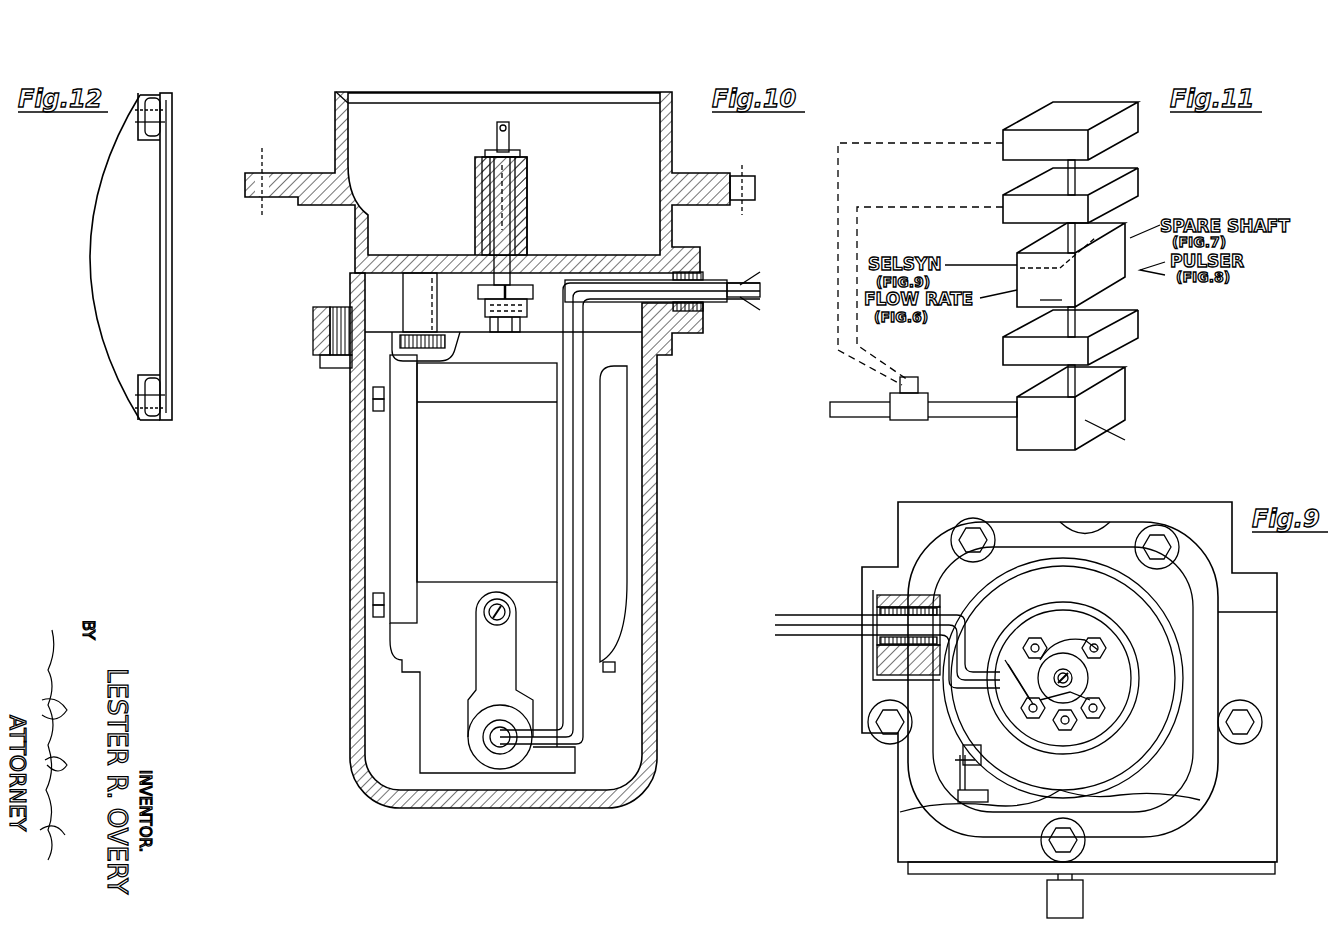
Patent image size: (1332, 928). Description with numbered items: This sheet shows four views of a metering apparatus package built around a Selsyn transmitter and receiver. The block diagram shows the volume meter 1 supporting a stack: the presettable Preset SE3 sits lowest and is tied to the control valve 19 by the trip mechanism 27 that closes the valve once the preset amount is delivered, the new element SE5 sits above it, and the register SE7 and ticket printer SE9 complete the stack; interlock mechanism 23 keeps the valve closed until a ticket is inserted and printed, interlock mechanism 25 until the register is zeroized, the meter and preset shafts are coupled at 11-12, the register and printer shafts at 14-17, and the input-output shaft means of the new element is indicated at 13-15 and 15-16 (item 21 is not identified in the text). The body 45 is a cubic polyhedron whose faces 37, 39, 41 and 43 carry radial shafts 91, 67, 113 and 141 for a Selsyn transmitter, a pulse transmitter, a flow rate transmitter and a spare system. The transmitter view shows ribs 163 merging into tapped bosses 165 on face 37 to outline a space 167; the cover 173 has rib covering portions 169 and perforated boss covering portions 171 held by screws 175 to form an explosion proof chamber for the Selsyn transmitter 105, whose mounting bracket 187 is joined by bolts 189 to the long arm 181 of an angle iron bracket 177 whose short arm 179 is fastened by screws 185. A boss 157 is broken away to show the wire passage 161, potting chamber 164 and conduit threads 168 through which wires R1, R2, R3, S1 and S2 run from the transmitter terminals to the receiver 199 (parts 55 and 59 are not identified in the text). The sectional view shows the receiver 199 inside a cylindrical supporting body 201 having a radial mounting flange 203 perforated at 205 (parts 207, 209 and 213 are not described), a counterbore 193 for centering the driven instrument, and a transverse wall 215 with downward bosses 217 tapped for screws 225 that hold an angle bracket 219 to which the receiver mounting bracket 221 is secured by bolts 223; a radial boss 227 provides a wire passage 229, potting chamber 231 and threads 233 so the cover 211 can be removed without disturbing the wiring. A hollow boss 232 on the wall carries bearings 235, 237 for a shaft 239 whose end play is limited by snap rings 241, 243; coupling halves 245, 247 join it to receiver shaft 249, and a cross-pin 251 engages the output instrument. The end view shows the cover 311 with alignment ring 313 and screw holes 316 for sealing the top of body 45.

In FIG. 12, the cover 311 is at (100, 206).
In FIG. 12, the alignment ring 313 is at (172, 168).
In FIG. 12, the holes 316 is at (175, 107).
In FIG. 10, the counterbore 193 is at (537, 100).
In FIG. 10, the receiver 199 is at (618, 497).
In FIG. 10, the supporting body 201 is at (690, 126).
In FIG. 10, the radial mounting flange 203 is at (700, 175).
In FIG. 10, the perforations 205 is at (262, 148).
In FIG. 10, the bolt shank 207 is at (330, 338).
In FIG. 10, the threaded portion 209 is at (332, 330).
In FIG. 10, the cover 211 is at (350, 452).
In FIG. 10, the nut 213 is at (320, 362).
In FIG. 10, the transverse wall 215 is at (545, 258).
In FIG. 10, the cylindrical bosses 217 is at (403, 285).
In FIG. 10, the L-shaped angle bracket 219 is at (403, 462).
In FIG. 10, the mounting bracket 221 is at (392, 515).
In FIG. 10, the bolts 223 is at (373, 403).
In FIG. 10, the screws 225 is at (428, 352).
In FIG. 10, the boss 227 is at (680, 250).
In FIG. 10, the wire passage 229 is at (628, 360).
In FIG. 10, the potting chamber 231 is at (690, 318).
In FIG. 10, the hollow cylindrical boss 232 is at (520, 195).
In FIG. 10, the threads 233 is at (338, 94).
In FIG. 10, the bearing 235 is at (527, 170).
In FIG. 10, the bearing 237 is at (515, 220).
In FIG. 10, the shaft 239 is at (512, 130).
In FIG. 10, the snap ring 241 is at (485, 148).
In FIG. 10, the snap ring 243 is at (470, 280).
In FIG. 10, the coupling half 245 is at (530, 273).
In FIG. 10, the coupling half 247 is at (490, 320).
In FIG. 10, the receiver shaft 249 is at (515, 332).
In FIG. 10, the cross-pin 251 is at (497, 127).
In FIG. 10, the wire R1 is at (755, 300).
In FIG. 9, the wire R1 is at (1093, 708).
In FIG. 10, the wire R2 is at (760, 291).
In FIG. 9, the wire R2 is at (1065, 720).
In FIG. 10, the wire R3 is at (718, 273).
In FIG. 9, the wire R3 is at (1033, 708).
In FIG. 10, the wire S1 is at (760, 310).
In FIG. 9, the wire S1 is at (1035, 648).
In FIG. 10, the wire S2 is at (760, 272).
In FIG. 9, the wire S2 is at (1094, 648).
In FIG. 11, the volume meter 1 is at (1110, 398).
In FIG. 11, the control valve 19 is at (905, 410).
In FIG. 11, the register shaft 21 is at (1120, 200).
In FIG. 11, the interlock mechanism 23 is at (838, 143).
In FIG. 11, the interlock mechanism 25 is at (857, 207).
In FIG. 11, the trip mechanism 27 is at (912, 375).
In FIG. 11, the face 37 is at (1040, 250).
In FIG. 9, the face 37 is at (1148, 510).
In FIG. 11, the face 39 is at (1105, 294).
In FIG. 11, the face 41 is at (1071, 265).
In FIG. 9, the face 41 is at (1282, 858).
In FIG. 11, the face 43 is at (1110, 218).
In FIG. 9, the face 43 is at (883, 850).
In FIG. 11, the output shaft 67 is at (1100, 265).
In FIG. 11, the output shaft 91 is at (1017, 262).
In FIG. 11, the output shaft 113 is at (1000, 262).
In FIG. 11, the output shaft 141 is at (1100, 240).
In FIG. 11, the meter shaft to preset input shaft coupling 11-12 is at (1068, 380).
In FIG. 11, the input-output shaft means 13-15 is at (1068, 318).
In FIG. 11, the register output shaft to printer input shaft coupling 14-17 is at (1068, 178).
In FIG. 11, the input-output shaft means 15-16 is at (1068, 243).
In FIG. 11, the Preset SE3 is at (1138, 328).
In FIG. 11, the new element SE5 is at (1125, 290).
In FIG. 11, the register SE7 is at (1138, 180).
In FIG. 11, the ticket printer SE9 is at (1138, 122).
In FIG. 9, the body 45 is at (1232, 489).
In FIG. 9, the base strip 55 is at (1078, 877).
In FIG. 9, the terminal block 59 is at (1075, 900).
In FIG. 9, the Selsyn transmitter 105 is at (1062, 560).
In FIG. 9, the boss 157 is at (875, 700).
In FIG. 9, the wire passage 161 is at (958, 628).
In FIG. 9, the ribs 163 is at (1085, 530).
In FIG. 9, the potting chamber 164 is at (1010, 585).
In FIG. 9, the bosses 165 is at (975, 528).
In FIG. 9, the space 167 is at (1100, 530).
In FIG. 9, the threads 168 is at (877, 665).
In FIG. 9, the rib covering portions 169 is at (1020, 548).
In FIG. 9, the boss covering portions 171 is at (958, 525).
In FIG. 9, the cover 173 is at (1258, 762).
In FIG. 9, the screws 175 is at (960, 540).
In FIG. 9, the L-shaped bracket 177 is at (958, 772).
In FIG. 9, the short arm 179 is at (940, 752).
In FIG. 9, the long arm 181 is at (958, 795).
In FIG. 9, the screws 185 is at (985, 757).
In FIG. 9, the mounting bracket 187 is at (1000, 800).
In FIG. 9, the bolts 189 is at (960, 806).